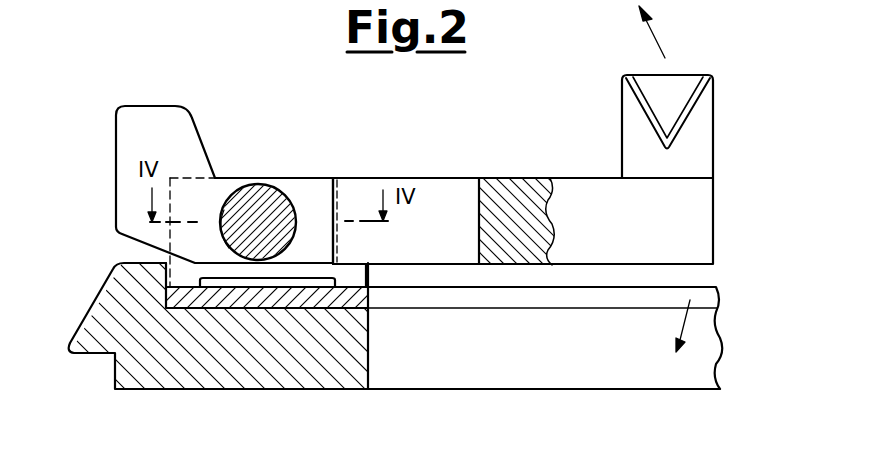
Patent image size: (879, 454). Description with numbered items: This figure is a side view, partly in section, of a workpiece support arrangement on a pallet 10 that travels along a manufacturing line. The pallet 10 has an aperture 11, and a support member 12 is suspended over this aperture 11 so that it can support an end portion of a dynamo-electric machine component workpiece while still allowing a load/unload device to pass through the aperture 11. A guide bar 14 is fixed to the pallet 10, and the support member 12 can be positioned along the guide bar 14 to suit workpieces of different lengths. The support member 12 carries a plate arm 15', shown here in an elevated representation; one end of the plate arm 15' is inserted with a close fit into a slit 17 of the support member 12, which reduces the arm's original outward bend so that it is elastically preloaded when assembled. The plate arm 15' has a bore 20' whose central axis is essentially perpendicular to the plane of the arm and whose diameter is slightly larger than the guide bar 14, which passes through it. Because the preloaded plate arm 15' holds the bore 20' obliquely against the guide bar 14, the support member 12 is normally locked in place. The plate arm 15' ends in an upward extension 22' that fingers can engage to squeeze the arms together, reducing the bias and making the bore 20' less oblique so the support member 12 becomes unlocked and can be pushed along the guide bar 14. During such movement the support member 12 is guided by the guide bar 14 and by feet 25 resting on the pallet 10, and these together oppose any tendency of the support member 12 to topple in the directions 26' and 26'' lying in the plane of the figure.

The upward extension 22' is at (226, 172).
The bore 20' is at (258, 196).
The guide bar 14 is at (268, 210).
The plate arm 15' is at (406, 199).
The slit 17 is at (479, 200).
The support member 12 is at (695, 232).
The toppling direction 26' is at (676, 32).
The toppling direction 26'' is at (723, 326).
The aperture 11 is at (478, 300).
The pallet 10 is at (107, 308).
The feet 25 is at (188, 280).